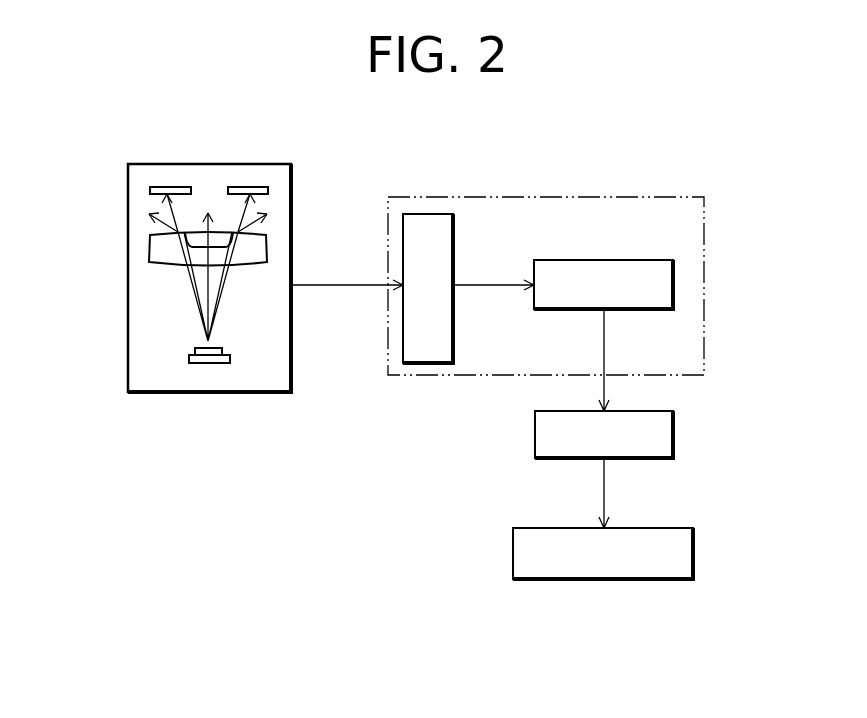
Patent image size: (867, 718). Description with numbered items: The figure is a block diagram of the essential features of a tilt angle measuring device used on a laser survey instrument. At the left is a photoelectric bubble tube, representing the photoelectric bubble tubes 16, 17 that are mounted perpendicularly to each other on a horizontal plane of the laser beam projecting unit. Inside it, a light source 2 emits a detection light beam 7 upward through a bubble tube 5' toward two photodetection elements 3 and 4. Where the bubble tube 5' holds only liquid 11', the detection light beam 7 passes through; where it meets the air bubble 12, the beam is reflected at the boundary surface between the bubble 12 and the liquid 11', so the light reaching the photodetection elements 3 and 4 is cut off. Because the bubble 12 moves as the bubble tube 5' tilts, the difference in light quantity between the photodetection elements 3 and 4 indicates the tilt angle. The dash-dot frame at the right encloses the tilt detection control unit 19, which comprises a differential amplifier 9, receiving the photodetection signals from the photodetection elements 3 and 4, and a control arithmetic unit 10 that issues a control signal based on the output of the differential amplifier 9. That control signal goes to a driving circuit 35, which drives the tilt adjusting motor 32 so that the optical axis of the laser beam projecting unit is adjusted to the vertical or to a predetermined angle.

The light source 2 is at (195, 350).
The photodetection element 3 is at (172, 187).
The photodetection element 4 is at (247, 187).
The bubble tube 5' is at (265, 220).
The detection light beam 7 is at (230, 292).
The differential amplifier 9 is at (423, 364).
The control arithmetic unit 10 is at (673, 298).
The liquid 11' is at (159, 266).
The air bubble 12 is at (197, 237).
The photoelectric bubble tube 16 is at (205, 393).
The photoelectric bubble tube 17 is at (209, 334).
The tilt detection control unit 19 is at (508, 197).
The tilt adjusting motor 32 is at (513, 556).
The driving circuit 35 is at (655, 458).